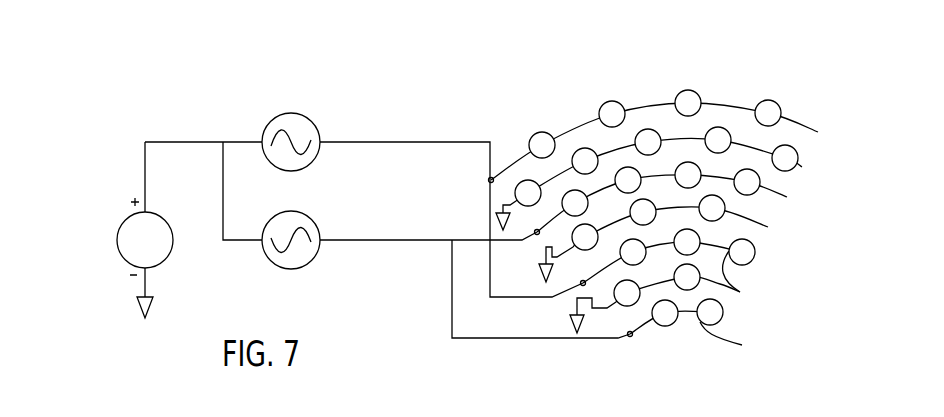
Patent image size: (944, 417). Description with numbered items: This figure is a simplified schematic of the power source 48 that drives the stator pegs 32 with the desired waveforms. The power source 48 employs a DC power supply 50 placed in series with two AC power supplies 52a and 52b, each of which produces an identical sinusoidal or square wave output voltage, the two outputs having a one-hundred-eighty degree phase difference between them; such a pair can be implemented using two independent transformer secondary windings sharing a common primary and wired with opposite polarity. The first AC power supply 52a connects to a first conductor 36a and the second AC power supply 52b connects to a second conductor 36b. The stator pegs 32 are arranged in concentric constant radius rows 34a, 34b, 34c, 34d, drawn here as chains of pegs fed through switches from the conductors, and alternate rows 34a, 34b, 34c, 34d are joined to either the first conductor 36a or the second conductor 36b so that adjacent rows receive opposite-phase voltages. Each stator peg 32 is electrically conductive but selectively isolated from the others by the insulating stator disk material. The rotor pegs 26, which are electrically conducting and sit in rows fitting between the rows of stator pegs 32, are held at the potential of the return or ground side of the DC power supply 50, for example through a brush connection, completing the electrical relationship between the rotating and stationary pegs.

The power source 48 is at (114, 144).
The DC power supply 50 is at (127, 262).
The first AC power supply 52a is at (318, 128).
The second AC power supply 52b is at (318, 220).
The first conductor 36a is at (490, 157).
The second conductor 36b is at (452, 307).
The stator peg 32 is at (652, 129).
The rotor peg 26 is at (778, 146).
The first row of stator pegs 34a is at (789, 121).
The second row of stator pegs 34b is at (772, 193).
The third row of stator pegs 34c is at (745, 287).
The fourth row of stator pegs 34d is at (707, 328).